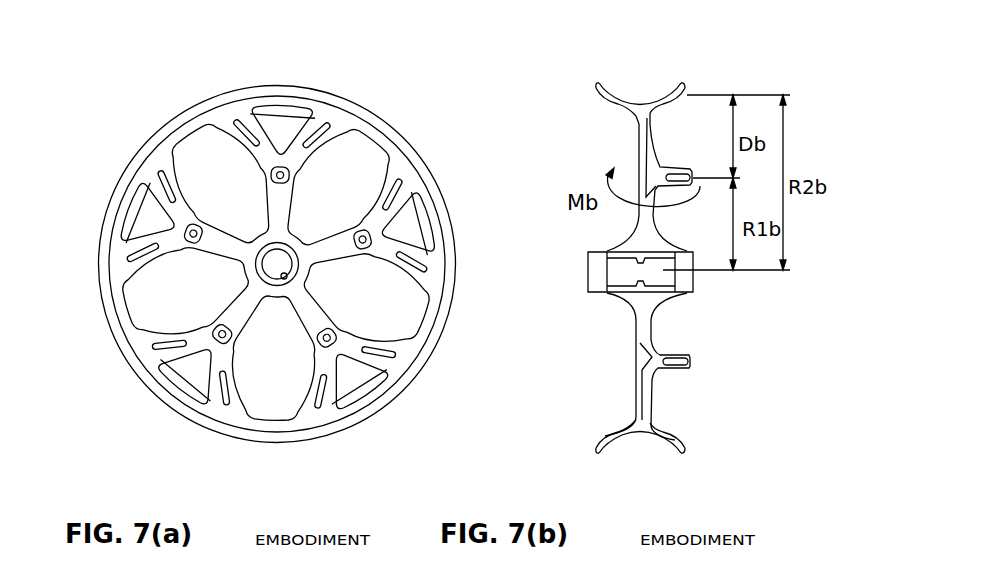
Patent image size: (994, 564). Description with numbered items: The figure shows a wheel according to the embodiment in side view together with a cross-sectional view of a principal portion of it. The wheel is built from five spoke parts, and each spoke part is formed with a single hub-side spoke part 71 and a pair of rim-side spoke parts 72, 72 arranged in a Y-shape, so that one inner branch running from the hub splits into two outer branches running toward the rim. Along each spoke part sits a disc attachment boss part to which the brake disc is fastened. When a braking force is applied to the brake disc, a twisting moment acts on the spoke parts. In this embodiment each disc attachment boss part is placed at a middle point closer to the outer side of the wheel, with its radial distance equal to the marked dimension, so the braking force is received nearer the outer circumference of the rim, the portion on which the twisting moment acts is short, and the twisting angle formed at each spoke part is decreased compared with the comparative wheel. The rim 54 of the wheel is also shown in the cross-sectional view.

The rim 54 is at (677, 440).
The hub-side spoke part 71 is at (218, 228).
The rim-side spoke part 72 is at (302, 146).